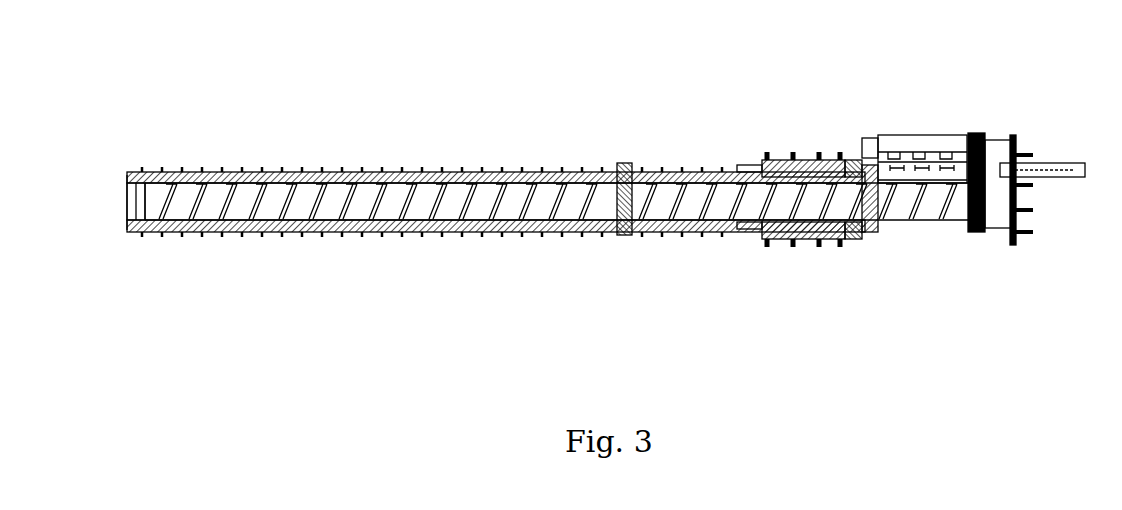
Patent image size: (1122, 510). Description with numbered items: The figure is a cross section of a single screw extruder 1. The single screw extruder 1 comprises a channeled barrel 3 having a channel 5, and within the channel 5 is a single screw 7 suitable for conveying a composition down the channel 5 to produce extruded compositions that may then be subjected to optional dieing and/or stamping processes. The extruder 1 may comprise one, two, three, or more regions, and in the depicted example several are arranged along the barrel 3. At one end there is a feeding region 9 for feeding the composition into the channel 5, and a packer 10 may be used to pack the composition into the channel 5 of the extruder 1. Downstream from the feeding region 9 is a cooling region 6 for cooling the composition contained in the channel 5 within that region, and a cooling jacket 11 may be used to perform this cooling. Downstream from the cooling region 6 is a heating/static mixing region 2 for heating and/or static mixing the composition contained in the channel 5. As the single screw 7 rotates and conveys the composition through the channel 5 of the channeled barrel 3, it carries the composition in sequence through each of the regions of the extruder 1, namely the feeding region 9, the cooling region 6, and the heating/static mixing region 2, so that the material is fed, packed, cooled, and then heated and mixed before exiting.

The single screw extruder 1 is at (571, 236).
The heating/static mixing region 2 is at (571, 175).
The channeled barrel 3 is at (487, 170).
The channel 5 is at (106, 217).
The cooling region 6 is at (802, 288).
The single screw 7 is at (682, 200).
The feeding region 9 is at (973, 125).
The packer 10 is at (970, 135).
The cooling jacket 11 is at (800, 160).